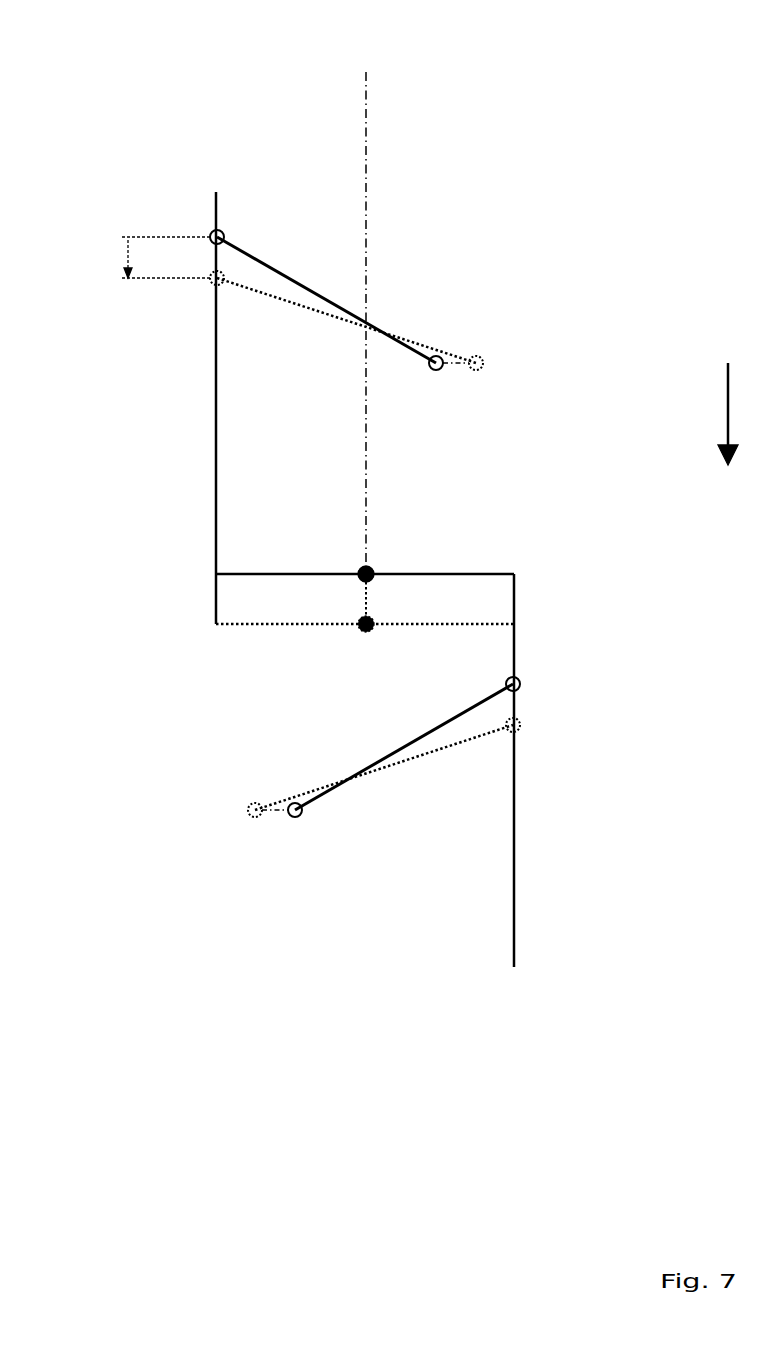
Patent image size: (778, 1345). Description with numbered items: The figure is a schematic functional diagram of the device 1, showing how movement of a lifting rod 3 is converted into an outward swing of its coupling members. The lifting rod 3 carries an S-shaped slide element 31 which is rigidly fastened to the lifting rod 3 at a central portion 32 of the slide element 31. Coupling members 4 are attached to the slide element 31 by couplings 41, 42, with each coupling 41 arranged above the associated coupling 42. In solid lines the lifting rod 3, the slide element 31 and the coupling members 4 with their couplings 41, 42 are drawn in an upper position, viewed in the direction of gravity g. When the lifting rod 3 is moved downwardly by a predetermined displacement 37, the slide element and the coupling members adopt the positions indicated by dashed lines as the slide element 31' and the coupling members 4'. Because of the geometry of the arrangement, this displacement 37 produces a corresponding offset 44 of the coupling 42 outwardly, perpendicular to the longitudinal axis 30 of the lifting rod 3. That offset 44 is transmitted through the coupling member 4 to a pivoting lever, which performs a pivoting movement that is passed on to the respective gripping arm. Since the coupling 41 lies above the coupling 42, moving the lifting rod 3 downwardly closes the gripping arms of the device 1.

The device 1 is at (568, 117).
The gravity g is at (727, 400).
The lifting rod 3 is at (365, 519).
The coupling member 4 is at (345, 505).
The coupling member in displaced position 4' is at (355, 552).
The longitudinal axis 30 is at (364, 110).
The S-shaped slide element 31 is at (298, 579).
The S-shaped slide element in displaced position 31' is at (448, 582).
The central portion 32 is at (365, 572).
The predetermined displacement 37 is at (128, 258).
The coupling 41 is at (222, 232).
The coupling 42 is at (448, 350).
The offset 44 is at (460, 372).